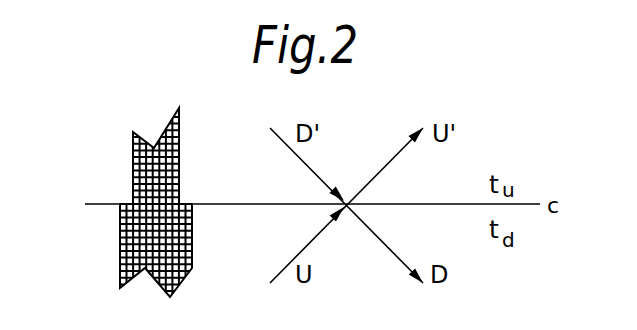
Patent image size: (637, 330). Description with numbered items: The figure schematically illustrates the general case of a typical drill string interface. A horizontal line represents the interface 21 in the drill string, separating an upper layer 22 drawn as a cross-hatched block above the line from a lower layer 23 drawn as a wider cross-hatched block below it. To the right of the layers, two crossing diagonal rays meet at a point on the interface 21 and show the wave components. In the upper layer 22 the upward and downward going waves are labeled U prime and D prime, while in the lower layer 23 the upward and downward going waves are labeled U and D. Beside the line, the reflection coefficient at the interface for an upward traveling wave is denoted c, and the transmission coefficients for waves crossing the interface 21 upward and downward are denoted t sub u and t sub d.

The interface 21 is at (101, 203).
The upper layer 22 is at (133, 158).
The lower layer 23 is at (120, 244).